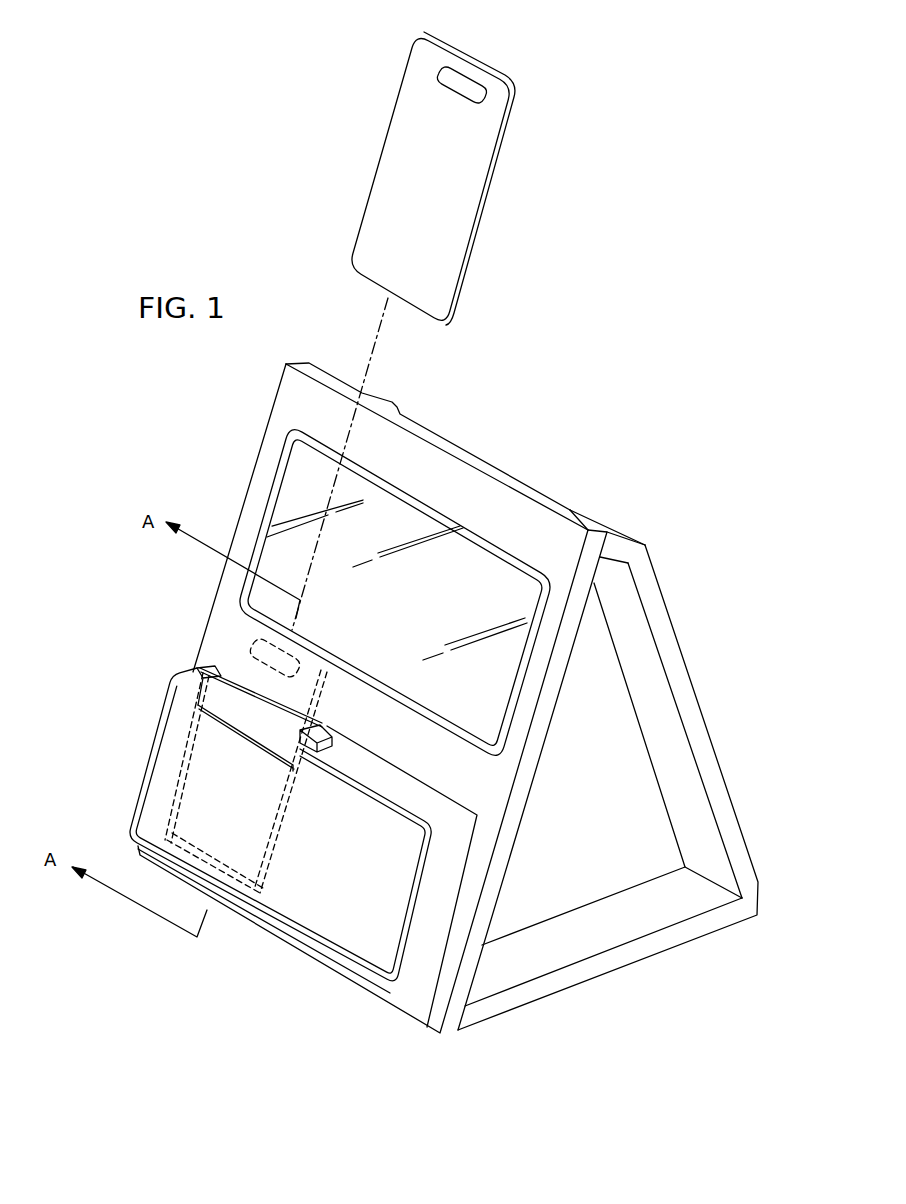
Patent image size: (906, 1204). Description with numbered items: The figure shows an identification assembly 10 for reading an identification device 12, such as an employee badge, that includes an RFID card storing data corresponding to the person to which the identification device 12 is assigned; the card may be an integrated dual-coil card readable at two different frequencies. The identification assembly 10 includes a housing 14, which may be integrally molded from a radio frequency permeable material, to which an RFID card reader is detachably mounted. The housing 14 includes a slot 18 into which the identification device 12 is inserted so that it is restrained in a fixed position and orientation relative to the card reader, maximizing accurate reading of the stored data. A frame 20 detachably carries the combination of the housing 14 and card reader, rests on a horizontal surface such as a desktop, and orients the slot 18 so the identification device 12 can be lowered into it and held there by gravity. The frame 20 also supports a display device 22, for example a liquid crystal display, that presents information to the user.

The identification assembly 10 is at (543, 380).
The identification device 12 is at (437, 186).
The housing 14 is at (364, 876).
The slot 18 is at (242, 716).
The frame 20 is at (681, 650).
The display device 22 is at (486, 604).